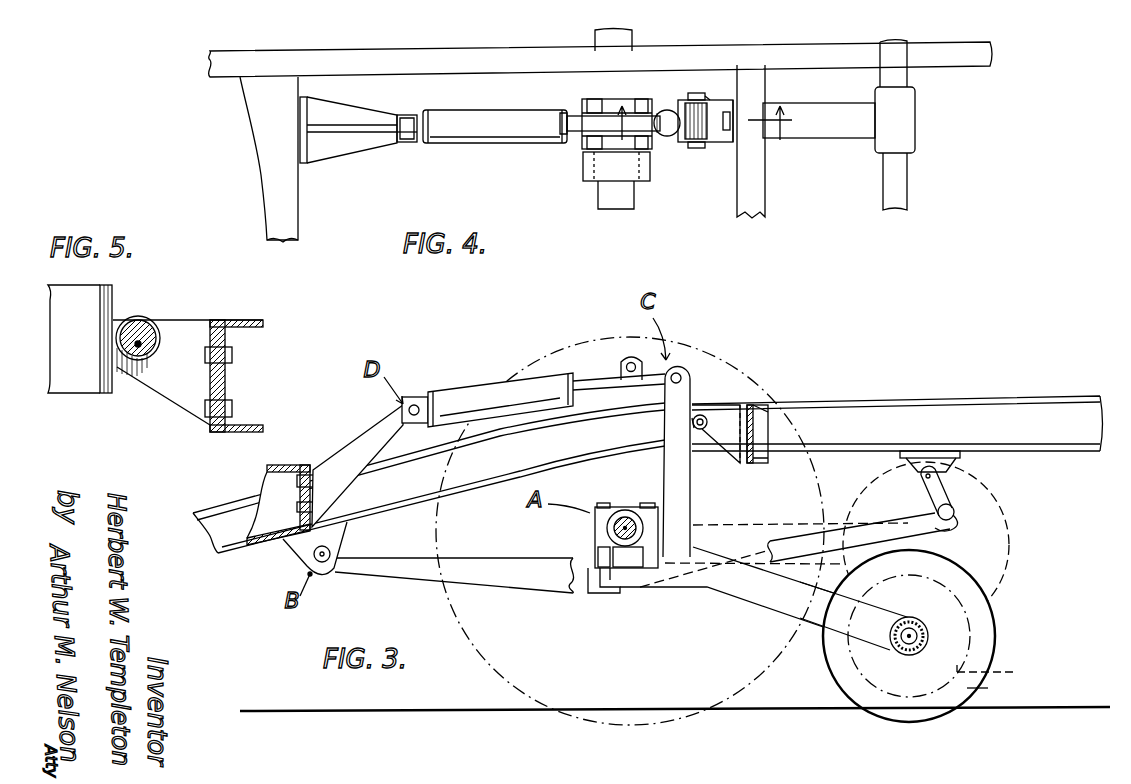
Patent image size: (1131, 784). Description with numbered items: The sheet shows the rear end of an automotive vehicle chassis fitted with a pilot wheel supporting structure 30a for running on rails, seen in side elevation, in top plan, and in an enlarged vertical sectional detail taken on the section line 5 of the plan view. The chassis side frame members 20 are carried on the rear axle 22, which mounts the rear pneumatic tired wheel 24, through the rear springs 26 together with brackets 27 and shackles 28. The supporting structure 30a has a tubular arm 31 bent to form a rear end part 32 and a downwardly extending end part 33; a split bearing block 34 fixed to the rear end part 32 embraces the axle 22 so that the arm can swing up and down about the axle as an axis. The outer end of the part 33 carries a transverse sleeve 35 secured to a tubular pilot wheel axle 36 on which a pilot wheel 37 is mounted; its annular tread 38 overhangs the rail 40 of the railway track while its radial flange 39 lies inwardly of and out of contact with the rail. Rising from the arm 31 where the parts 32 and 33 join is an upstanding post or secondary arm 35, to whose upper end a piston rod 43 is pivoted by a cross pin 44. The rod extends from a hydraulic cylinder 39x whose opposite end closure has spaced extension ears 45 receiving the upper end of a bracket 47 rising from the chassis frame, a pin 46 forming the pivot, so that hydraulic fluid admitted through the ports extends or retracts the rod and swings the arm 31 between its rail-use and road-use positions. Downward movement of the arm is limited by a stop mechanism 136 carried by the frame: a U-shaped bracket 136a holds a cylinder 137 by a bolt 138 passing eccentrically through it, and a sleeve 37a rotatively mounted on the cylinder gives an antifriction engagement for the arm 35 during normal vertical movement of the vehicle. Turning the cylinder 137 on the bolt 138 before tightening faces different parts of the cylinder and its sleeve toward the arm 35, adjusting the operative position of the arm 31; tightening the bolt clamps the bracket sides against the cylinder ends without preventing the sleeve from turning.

In FIG. 4, the section line 5 is at (687, 143).
In FIG. 4, the side frame members 20 is at (375, 58).
In FIG. 3, the side frame members 20 is at (866, 396).
In FIG. 4, the rear axle 22 is at (633, 33).
In FIG. 3, the rear axle 22 is at (616, 505).
In FIG. 3, the rear pneumatic tired wheels 24 is at (762, 670).
In FIG. 3, the rear springs 26 is at (412, 557).
In FIG. 3, the brackets 27 is at (300, 562).
In FIG. 3, the shackles 28 is at (926, 497).
In FIG. 3, the rear pilot wheel supporting structure 30a is at (1007, 623).
In FIG. 3, the arms 31 is at (752, 604).
In FIG. 3, the rear end part of arm 32 is at (603, 593).
In FIG. 4, the front end part of arm 33 is at (845, 130).
In FIG. 3, the front end part of arm 33 is at (879, 609).
In FIG. 4, the bearing block 34 is at (590, 103).
In FIG. 3, the bearing block 34 is at (595, 533).
In FIG. 4, the secondary arm 35 is at (667, 110).
In FIG. 5, the secondary arm 35 is at (65, 392).
In FIG. 3, the secondary arm 35 is at (687, 368).
In FIG. 4, the pilot wheel axle 36 is at (902, 181).
In FIG. 3, the pilot wheel axle 36 is at (928, 637).
In FIG. 4, the pilot wheels 37 is at (706, 103).
In FIG. 3, the pilot wheels 37 is at (947, 657).
In FIG. 5, the sleeve 37a is at (150, 350).
In FIG. 3, the annular tread 38 is at (1002, 671).
In FIG. 3, the radial flange 39 is at (991, 690).
In FIG. 4, the hydraulic cylinder 39x is at (467, 111).
In FIG. 3, the hydraulic cylinder 39x is at (465, 374).
In FIG. 3, the rails 40 is at (1061, 707).
In FIG. 4, the piston rod 43 is at (568, 128).
In FIG. 3, the piston rod 43 is at (593, 373).
In FIG. 3, the cross pin 44 is at (676, 372).
In FIG. 4, the extension ears 45 is at (399, 142).
In FIG. 3, the extension ears 45 is at (414, 398).
In FIG. 4, the pin 46 is at (410, 112).
In FIG. 3, the pin 46 is at (403, 409).
In FIG. 4, the bracket 47 is at (348, 148).
In FIG. 3, the bracket 47 is at (360, 453).
In FIG. 4, the stop mechanism 136 is at (712, 146).
In FIG. 5, the stop mechanism 136 is at (190, 312).
In FIG. 3, the stop mechanism 136 is at (737, 398).
In FIG. 4, the U-shaped bracket 136a is at (727, 146).
In FIG. 4, the cylinder 137 is at (667, 123).
In FIG. 5, the cylinder 137 is at (127, 333).
In FIG. 3, the cylinder 137 is at (707, 396).
In FIG. 5, the bolt 138 is at (128, 375).
In FIG. 3, the bolt 138 is at (704, 431).